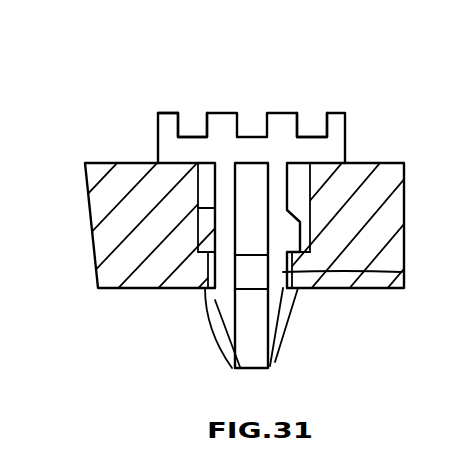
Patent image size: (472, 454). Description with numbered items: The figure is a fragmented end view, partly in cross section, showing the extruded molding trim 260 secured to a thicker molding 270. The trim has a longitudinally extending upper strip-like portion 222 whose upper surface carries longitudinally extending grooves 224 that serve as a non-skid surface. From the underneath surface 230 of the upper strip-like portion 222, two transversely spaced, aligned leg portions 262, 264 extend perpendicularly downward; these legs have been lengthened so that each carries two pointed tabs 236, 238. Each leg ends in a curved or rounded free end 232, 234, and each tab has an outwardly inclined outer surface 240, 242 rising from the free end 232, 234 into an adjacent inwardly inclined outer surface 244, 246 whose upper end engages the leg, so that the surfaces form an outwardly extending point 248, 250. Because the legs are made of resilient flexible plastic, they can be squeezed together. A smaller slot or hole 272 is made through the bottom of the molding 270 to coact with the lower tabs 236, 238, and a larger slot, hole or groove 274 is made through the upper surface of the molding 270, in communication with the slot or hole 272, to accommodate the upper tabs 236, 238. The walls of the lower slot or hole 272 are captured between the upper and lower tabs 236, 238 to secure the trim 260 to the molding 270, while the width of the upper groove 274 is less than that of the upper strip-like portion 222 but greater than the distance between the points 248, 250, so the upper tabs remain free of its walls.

The upper strip-like portion 222 is at (160, 124).
The grooves 224 is at (201, 126).
The underneath surface 230 is at (333, 164).
The free end 232 is at (237, 372).
The free end 234 is at (280, 368).
The pointed tab 236 is at (213, 252).
The pointed tab 238 is at (300, 240).
The outwardly inclined outer surface 240 is at (175, 287).
The outwardly inclined outer surface 242 is at (300, 256).
The inwardly inclined outer surface 244 is at (197, 216).
The inwardly inclined outer surface 246 is at (287, 223).
The point 248 is at (200, 218).
The point 250 is at (288, 238).
The extruded molding trim 260 is at (279, 74).
The leg portion 262 is at (200, 290).
The leg portion 264 is at (400, 278).
The molding 270 is at (210, 252).
The slot or hole 272 is at (278, 290).
The slot, hole or groove 274 is at (203, 180).